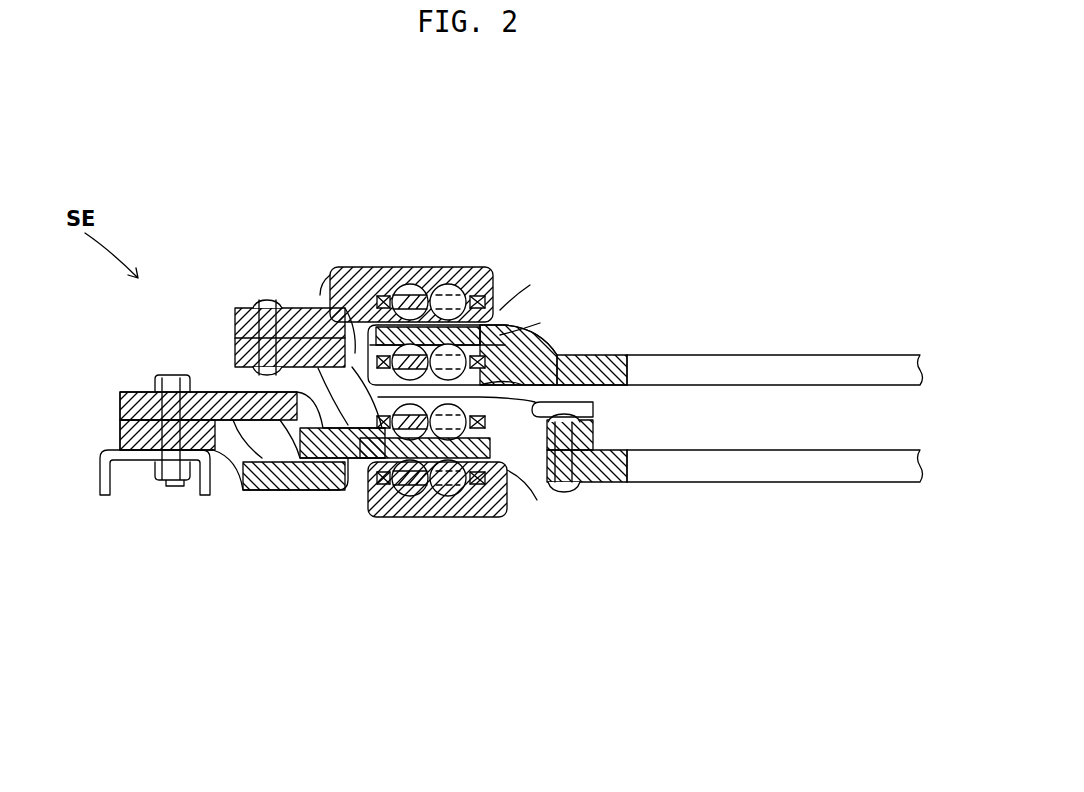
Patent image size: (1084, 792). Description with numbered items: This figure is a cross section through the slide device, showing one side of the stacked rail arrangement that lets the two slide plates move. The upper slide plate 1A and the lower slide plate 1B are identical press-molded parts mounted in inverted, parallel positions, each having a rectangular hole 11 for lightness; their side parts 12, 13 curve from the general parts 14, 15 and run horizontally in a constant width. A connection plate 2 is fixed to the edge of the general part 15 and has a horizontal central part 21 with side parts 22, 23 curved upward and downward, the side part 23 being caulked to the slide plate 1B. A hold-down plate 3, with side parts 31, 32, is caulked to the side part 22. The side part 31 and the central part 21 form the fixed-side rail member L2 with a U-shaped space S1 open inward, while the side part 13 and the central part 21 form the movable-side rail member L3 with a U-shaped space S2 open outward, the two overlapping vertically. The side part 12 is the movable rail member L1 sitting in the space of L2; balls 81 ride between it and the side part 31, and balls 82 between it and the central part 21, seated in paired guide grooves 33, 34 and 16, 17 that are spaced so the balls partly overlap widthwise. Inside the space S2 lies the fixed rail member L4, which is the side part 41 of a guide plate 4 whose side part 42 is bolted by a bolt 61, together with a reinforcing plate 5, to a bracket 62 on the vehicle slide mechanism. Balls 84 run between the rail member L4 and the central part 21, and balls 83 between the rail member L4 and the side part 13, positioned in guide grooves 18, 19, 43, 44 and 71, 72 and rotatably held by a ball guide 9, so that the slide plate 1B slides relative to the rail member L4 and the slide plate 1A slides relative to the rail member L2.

The slide plate 1A is at (762, 355).
The slide plate 1B is at (772, 482).
The connection plate 2 is at (590, 366).
The hold-down plate 3 is at (372, 268).
The guide plate 4 is at (275, 475).
The reinforcing plate 5 is at (230, 462).
The ball guide 9 is at (580, 439).
The rectangular hole 11 is at (645, 355).
The side part 12 is at (540, 320).
The side part 13 is at (500, 522).
The general part 14 is at (705, 355).
The general part 15 is at (700, 482).
The guide groove 16 is at (342, 298).
The guide groove 17 is at (500, 300).
The guide groove 18 is at (548, 364).
The guide groove 19 is at (562, 401).
The horizontal central part 21 is at (345, 462).
The side part 22 is at (318, 330).
The side part 23 is at (545, 500).
The side part 31 is at (450, 262).
The side part 32 is at (240, 305).
The guide groove 33 is at (432, 275).
The guide groove 34 is at (475, 282).
The side part 41 is at (440, 525).
The side part 42 is at (120, 390).
The guide groove 43 is at (396, 530).
The guide groove 44 is at (520, 510).
The bolt 61 is at (152, 465).
The bracket 62 is at (105, 495).
The guide groove 71 is at (405, 540).
The guide groove 72 is at (482, 525).
The ball 81 is at (381, 262).
The ball 82 is at (542, 345).
The ball 83 is at (600, 417).
The ball 84 is at (415, 520).
The rail member L1 is at (520, 322).
The rail member L2 is at (410, 290).
The rail member L3 is at (495, 525).
The rail member L4 is at (385, 530).
The U-shaped space S1 is at (338, 292).
The U-shaped space S2 is at (530, 525).